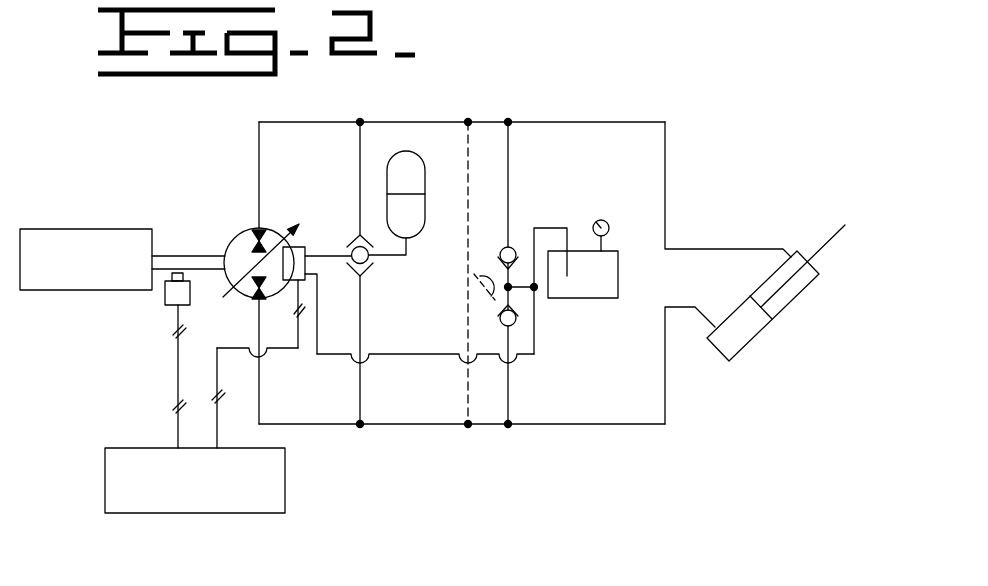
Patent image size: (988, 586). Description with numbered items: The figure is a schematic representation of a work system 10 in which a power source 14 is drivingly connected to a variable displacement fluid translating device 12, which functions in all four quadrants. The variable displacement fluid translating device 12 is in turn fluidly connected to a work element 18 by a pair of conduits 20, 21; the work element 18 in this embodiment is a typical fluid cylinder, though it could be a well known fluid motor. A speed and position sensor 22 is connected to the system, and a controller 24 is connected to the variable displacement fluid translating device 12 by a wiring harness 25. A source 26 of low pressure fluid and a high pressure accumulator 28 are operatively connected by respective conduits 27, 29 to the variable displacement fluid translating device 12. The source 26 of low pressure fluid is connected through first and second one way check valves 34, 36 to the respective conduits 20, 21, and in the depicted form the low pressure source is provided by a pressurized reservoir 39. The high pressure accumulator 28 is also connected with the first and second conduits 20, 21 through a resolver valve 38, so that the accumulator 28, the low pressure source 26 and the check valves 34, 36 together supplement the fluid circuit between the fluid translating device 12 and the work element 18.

The work system 10 is at (198, 170).
The variable displacement fluid translating device 12 is at (231, 242).
The power source 14 is at (65, 228).
The work element 18 is at (763, 332).
The conduit 20 is at (388, 122).
The conduit 21 is at (418, 427).
The speed and position sensor 22 is at (163, 295).
The controller 24 is at (104, 477).
The wiring harness 25 is at (287, 350).
The source of low pressure fluid 26 is at (604, 326).
The conduit 27 is at (407, 357).
The high pressure accumulator 28 is at (420, 152).
The conduit 29 is at (325, 255).
The first one way check valve 34 is at (499, 261).
The second one way check valve 36 is at (518, 313).
The resolver valve 38 is at (370, 260).
The pressurized reservoir 39 is at (619, 267).